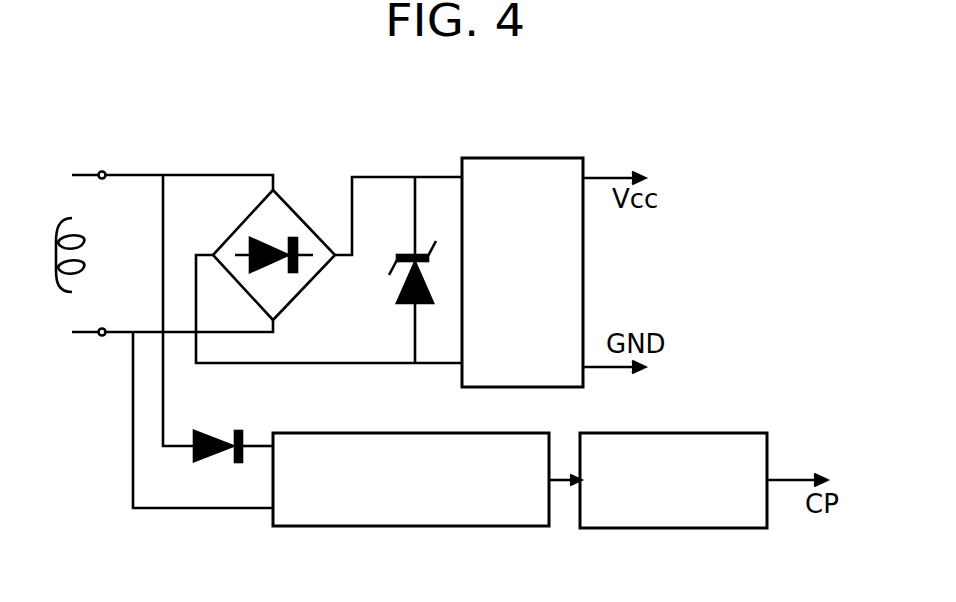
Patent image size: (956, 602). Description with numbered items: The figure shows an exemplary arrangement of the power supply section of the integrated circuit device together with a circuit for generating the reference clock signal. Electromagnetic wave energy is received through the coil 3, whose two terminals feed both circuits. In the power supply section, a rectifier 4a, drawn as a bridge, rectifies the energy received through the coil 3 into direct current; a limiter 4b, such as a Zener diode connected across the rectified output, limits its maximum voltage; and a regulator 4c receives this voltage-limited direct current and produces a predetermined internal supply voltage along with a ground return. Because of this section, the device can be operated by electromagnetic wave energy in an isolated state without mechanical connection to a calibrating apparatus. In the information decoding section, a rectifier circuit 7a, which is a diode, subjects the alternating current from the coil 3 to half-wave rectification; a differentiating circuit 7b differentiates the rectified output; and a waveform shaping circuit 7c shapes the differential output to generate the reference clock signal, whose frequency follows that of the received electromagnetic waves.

The coil 3 is at (62, 222).
The rectifier 4a is at (307, 222).
The limiter 4b is at (408, 250).
The regulator 4c is at (585, 273).
The rectifier circuit 7a is at (218, 430).
The differentiating circuit 7b is at (397, 432).
The waveform shaping circuit 7c is at (751, 432).